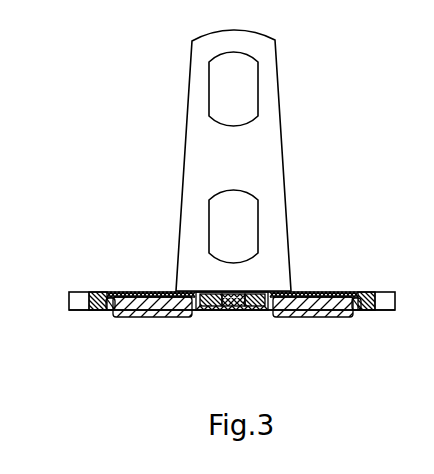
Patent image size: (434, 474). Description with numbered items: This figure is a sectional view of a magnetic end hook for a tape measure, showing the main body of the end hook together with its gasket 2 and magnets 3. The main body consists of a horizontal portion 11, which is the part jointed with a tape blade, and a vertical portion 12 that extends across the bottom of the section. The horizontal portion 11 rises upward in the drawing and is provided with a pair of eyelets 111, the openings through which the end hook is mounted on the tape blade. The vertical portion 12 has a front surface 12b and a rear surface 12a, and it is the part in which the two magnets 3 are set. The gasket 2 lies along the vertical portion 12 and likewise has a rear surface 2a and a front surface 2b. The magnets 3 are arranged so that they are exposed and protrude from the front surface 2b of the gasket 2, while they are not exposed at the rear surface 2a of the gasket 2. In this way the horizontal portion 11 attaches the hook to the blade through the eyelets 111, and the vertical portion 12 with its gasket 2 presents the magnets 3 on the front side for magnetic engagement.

The horizontal portion 11 is at (272, 127).
The eyelets 111 is at (239, 88).
The vertical portion 12 is at (368, 286).
The rear surface 12a is at (98, 292).
The front surface 12b is at (95, 313).
The gasket 2 is at (360, 309).
The rear surface 2a is at (147, 292).
The front surface 2b is at (148, 319).
The magnets 3 is at (325, 315).